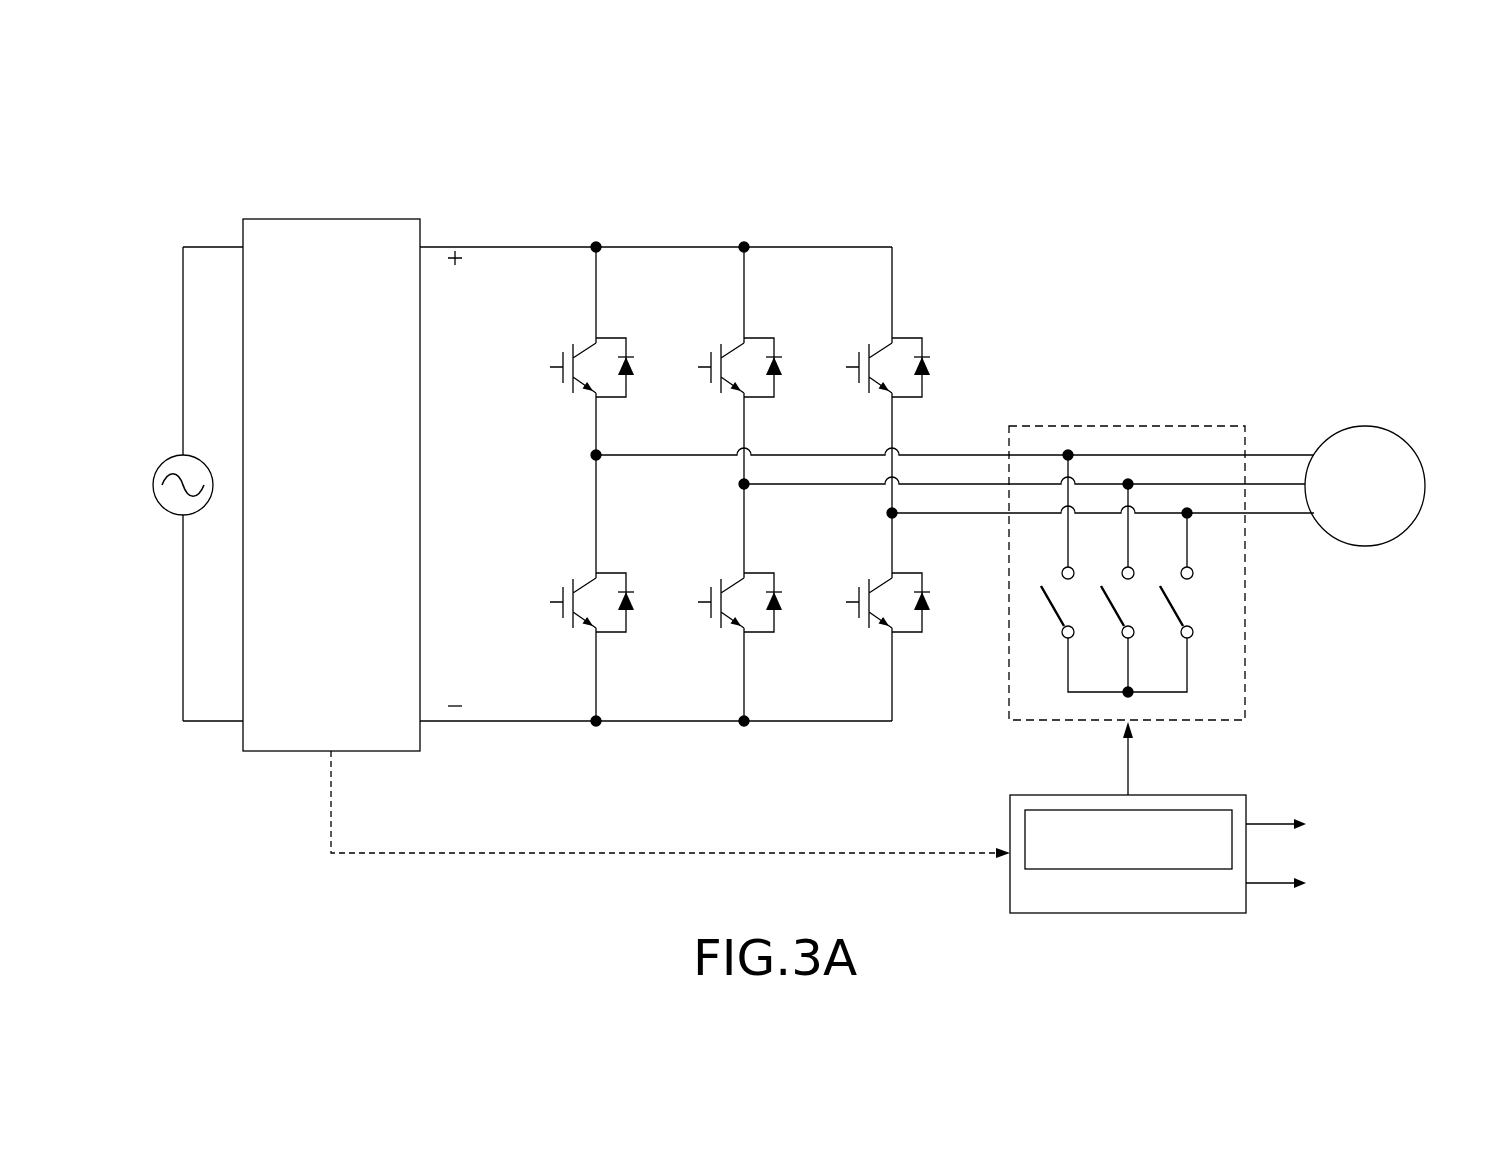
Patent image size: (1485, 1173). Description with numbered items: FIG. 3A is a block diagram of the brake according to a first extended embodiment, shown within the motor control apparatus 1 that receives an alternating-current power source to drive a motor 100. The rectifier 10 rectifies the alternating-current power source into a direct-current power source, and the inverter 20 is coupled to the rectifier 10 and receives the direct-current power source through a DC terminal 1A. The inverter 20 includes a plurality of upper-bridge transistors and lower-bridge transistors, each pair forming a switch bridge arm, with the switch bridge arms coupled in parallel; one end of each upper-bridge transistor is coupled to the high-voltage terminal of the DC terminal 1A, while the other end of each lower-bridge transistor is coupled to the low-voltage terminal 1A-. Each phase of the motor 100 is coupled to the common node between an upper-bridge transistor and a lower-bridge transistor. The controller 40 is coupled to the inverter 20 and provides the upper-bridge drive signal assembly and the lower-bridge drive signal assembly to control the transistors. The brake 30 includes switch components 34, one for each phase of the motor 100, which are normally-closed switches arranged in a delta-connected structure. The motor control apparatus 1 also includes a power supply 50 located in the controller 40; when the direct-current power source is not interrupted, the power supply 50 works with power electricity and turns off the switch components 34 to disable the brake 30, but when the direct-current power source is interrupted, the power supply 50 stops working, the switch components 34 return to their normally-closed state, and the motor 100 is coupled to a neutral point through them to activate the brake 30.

The motor control apparatus 1 is at (782, 98).
The DC terminal 1A is at (620, 478).
The low-voltage terminal 1A- is at (461, 723).
The rectifier 10 is at (330, 226).
The inverter 20 is at (838, 200).
The brake 30 is at (1127, 552).
The switch component 34 is at (1070, 603).
The controller 40 is at (1113, 856).
The power supply 50 is at (1115, 817).
The motor 100 is at (1363, 432).